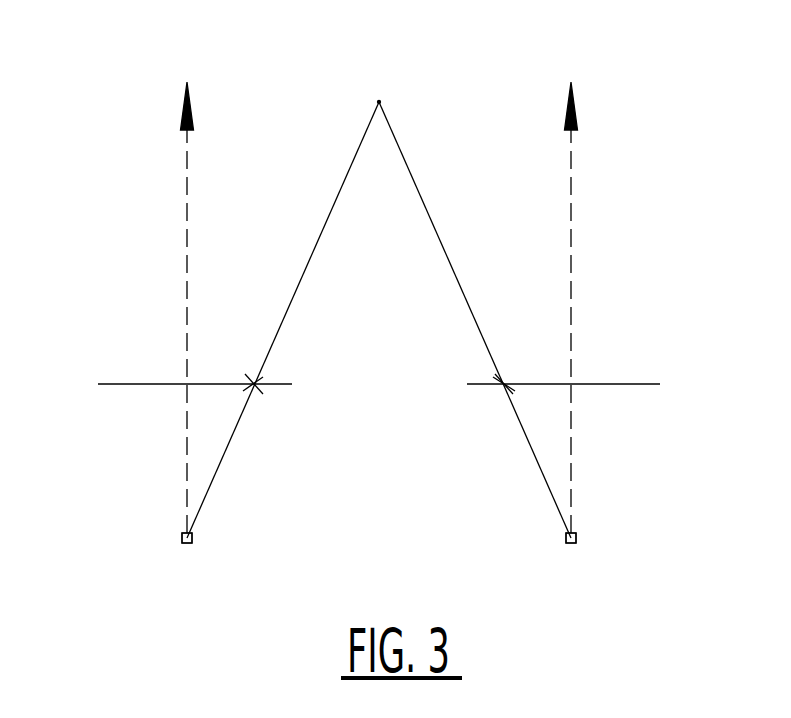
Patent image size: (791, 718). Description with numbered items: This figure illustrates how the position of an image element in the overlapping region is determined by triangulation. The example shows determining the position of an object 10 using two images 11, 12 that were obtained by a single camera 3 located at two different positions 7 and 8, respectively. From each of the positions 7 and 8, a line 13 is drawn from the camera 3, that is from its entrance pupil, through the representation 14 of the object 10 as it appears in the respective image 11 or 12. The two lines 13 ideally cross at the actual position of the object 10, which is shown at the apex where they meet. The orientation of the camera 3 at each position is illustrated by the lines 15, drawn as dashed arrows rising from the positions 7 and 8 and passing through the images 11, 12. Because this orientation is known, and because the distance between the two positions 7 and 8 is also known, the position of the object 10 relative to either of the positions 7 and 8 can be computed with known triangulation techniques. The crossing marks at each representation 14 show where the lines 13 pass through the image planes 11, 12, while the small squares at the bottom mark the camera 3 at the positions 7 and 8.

The camera 3 is at (187, 543).
The first camera position 7 is at (185, 532).
The second camera position 8 is at (575, 532).
The object 10 is at (379, 102).
The first image 11 is at (130, 384).
The second image 12 is at (612, 384).
The lines 13 is at (328, 217).
The representation of object 14 is at (253, 374).
The camera orientation lines 15 is at (186, 166).